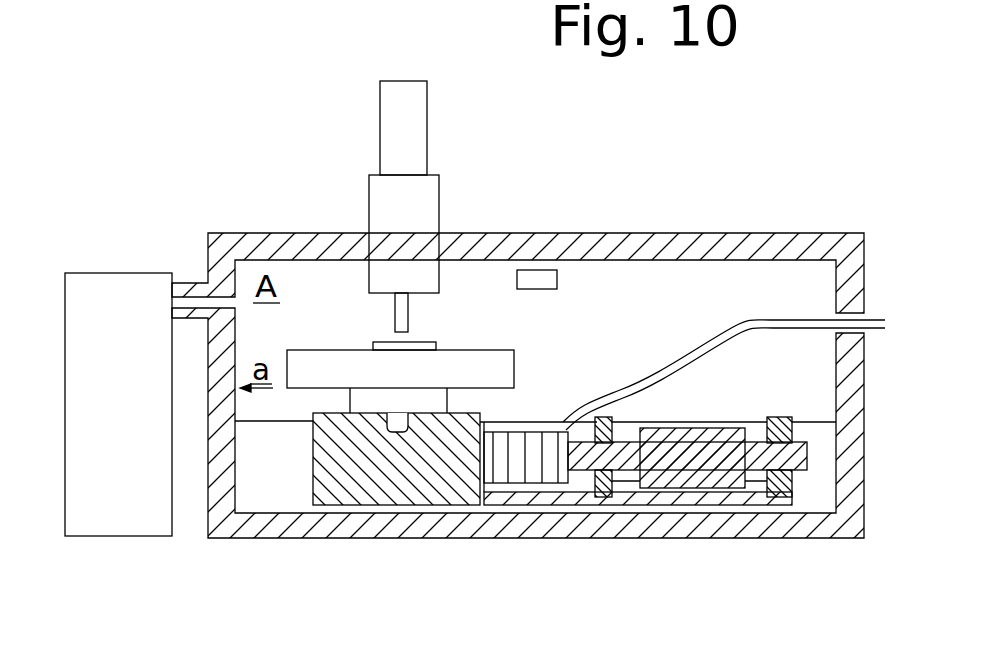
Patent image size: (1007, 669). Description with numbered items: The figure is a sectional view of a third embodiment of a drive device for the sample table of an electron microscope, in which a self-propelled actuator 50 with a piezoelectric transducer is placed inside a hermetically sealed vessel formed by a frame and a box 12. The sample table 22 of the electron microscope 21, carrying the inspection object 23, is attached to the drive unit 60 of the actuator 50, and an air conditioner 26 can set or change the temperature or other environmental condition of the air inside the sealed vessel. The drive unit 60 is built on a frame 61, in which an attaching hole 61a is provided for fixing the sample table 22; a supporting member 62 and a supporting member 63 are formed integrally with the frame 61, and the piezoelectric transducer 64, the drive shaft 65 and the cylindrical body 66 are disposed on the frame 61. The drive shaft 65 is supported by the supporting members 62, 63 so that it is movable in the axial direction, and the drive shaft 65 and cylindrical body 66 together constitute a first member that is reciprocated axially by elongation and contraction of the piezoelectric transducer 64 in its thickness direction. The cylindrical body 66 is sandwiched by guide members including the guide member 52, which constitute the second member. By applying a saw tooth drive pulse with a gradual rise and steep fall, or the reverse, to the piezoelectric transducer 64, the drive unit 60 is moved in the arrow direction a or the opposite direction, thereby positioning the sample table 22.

The box 12 is at (578, 243).
The electron microscope 21 is at (400, 130).
The sample table 22 is at (480, 365).
The inspection object 23 is at (378, 340).
The air conditioner 26 is at (120, 292).
The self-propelled actuator 50 is at (730, 415).
The guide member 52 is at (273, 500).
The drive unit 60 is at (297, 458).
The frame 61 is at (430, 487).
The attaching hole 61a is at (425, 413).
The supporting member 62 is at (612, 478).
The supporting member 63 is at (782, 497).
The piezoelectric transducer 64 is at (525, 483).
The drive shaft 65 is at (632, 422).
The cylindrical body 66 is at (698, 480).